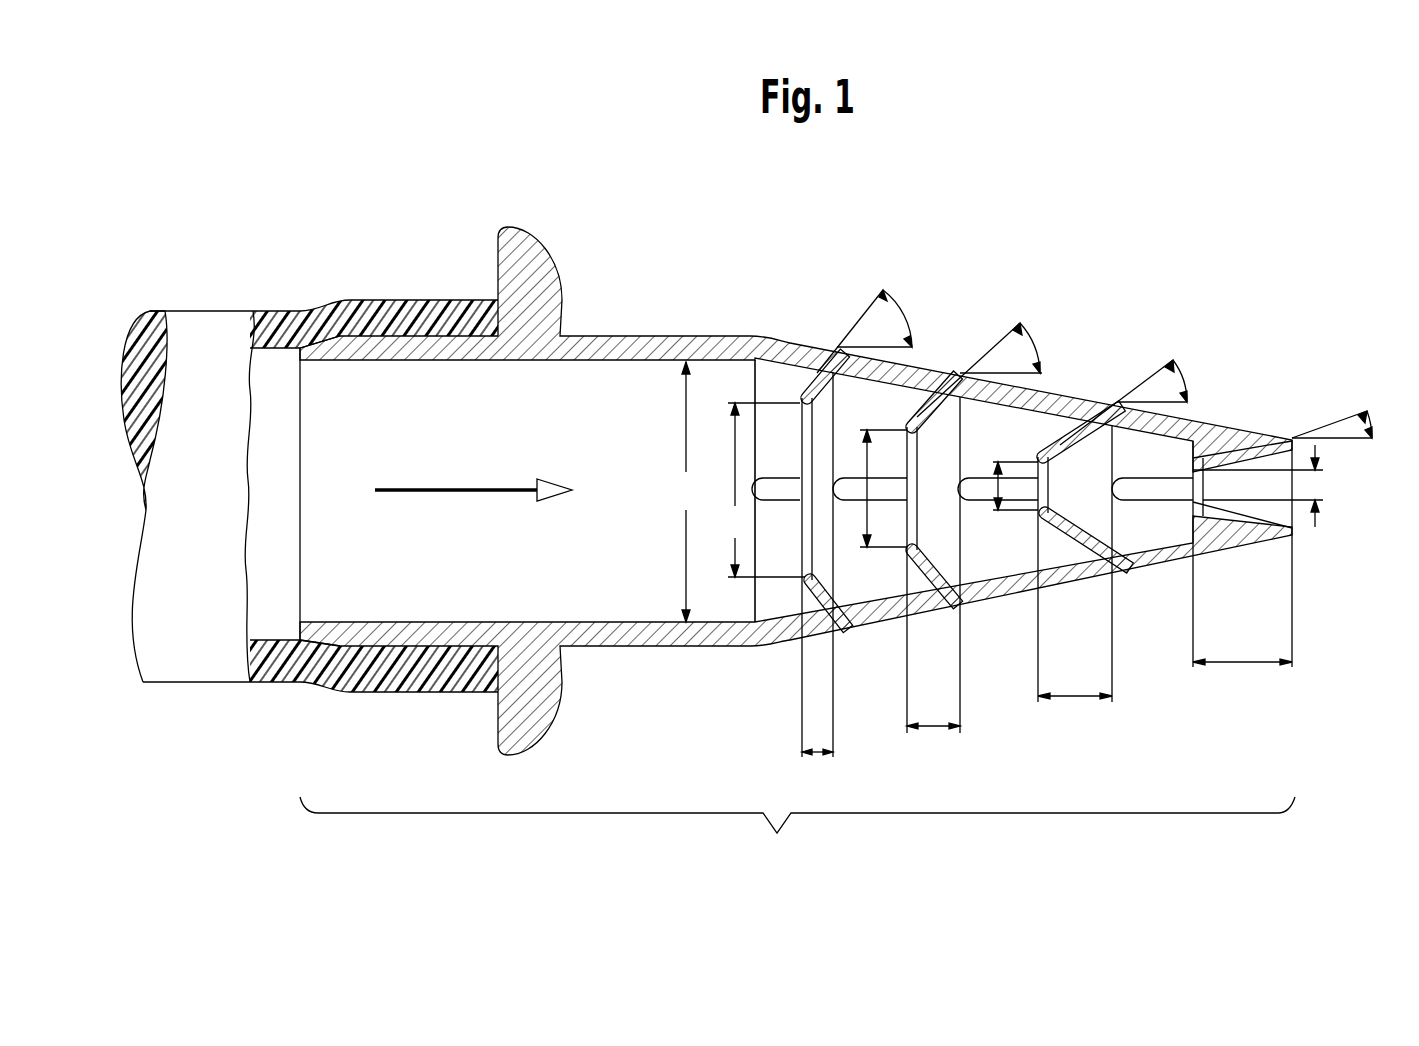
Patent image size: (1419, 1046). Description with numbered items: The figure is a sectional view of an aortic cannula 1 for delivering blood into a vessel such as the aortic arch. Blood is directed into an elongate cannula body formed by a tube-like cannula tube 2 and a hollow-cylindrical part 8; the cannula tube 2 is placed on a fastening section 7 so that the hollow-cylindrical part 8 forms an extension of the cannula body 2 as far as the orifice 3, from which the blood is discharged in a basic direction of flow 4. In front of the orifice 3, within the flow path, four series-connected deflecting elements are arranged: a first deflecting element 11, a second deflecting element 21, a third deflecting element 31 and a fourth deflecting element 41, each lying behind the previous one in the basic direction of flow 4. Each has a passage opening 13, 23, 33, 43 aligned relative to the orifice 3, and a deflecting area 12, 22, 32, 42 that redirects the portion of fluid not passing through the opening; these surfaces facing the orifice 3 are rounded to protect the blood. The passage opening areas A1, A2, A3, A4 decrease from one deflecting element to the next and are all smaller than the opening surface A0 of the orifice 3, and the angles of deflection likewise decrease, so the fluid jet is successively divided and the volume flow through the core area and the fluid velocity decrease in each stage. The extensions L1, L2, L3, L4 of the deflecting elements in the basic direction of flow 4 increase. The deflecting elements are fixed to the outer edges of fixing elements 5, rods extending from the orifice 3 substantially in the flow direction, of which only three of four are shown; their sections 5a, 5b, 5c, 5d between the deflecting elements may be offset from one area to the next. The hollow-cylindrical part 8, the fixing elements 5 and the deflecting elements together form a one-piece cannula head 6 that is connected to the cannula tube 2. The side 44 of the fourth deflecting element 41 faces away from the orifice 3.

The aortic cannula 1 is at (619, 260).
The cannula body 2 is at (392, 682).
The orifice 3 is at (748, 385).
The basic direction of flow 4 is at (473, 476).
The fixing elements 5 is at (880, 360).
The fixing element section 5a is at (786, 640).
The fixing element section 5b is at (866, 622).
The fixing element section 5c is at (998, 593).
The fixing element section 5d is at (1152, 560).
The cannula head 6 is at (797, 832).
The fastening section 7 is at (432, 626).
The hollow-cylindrical part 8 is at (610, 648).
The first deflecting element 11 is at (808, 392).
The deflecting area 12 is at (803, 590).
The passage opening 13 is at (792, 463).
The second deflecting element 21 is at (914, 420).
The deflecting area 22 is at (925, 586).
The passage opening 23 is at (904, 460).
The third deflecting element 31 is at (1063, 438).
The deflecting area 32 is at (1062, 548).
The passage opening 33 is at (1035, 468).
The fourth deflecting element 41 is at (1226, 458).
The deflecting area 42 is at (1220, 523).
The passage opening 43 is at (1190, 481).
The side facing away from the orifice 44 is at (1293, 528).
The opening surface of the orifice A0 is at (686, 492).
The area of the passage opening A1 is at (764, 490).
The area of the passage opening A2 is at (883, 488).
The area of the passage opening A3 is at (1011, 504).
The area of the passage opening A4 is at (1272, 486).
The extension L1 is at (817, 769).
The extension L2 is at (933, 744).
The extension L3 is at (1075, 712).
The extension L4 is at (1242, 678).